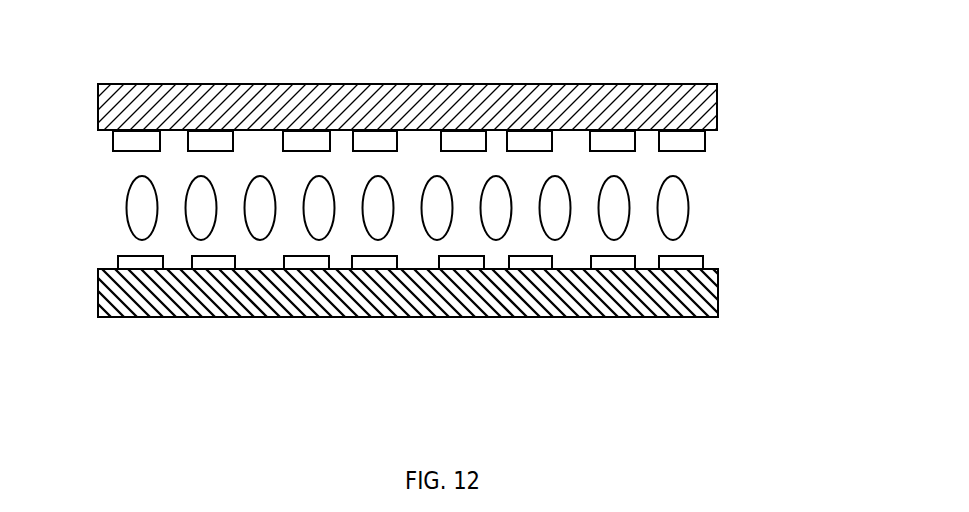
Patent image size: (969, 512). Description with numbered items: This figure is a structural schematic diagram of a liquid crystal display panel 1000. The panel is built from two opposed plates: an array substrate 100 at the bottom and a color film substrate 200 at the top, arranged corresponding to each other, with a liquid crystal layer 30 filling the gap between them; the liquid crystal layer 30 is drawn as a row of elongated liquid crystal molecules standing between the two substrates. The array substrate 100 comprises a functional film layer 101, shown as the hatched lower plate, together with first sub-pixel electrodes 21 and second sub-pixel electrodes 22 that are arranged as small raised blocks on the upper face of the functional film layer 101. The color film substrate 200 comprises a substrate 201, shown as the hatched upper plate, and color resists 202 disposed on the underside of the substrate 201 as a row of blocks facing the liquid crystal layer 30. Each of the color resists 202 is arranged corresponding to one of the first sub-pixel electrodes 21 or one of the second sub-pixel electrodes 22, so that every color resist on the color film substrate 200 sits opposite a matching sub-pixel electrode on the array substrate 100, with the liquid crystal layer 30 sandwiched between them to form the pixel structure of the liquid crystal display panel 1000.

The liquid crystal display panel 1000 is at (136, 48).
The color film substrate 200 is at (815, 98).
The substrate 201 is at (717, 102).
The color resists 202 is at (705, 139).
The liquid crystal layer 30 is at (704, 205).
The array substrate 100 is at (693, 372).
The functional film layer 101 is at (553, 298).
The first sub-pixel electrodes 21 is at (609, 263).
The second sub-pixel electrodes 22 is at (683, 263).